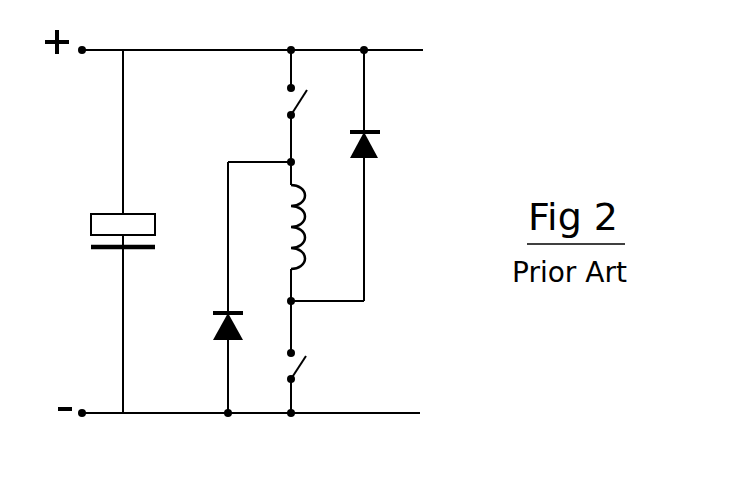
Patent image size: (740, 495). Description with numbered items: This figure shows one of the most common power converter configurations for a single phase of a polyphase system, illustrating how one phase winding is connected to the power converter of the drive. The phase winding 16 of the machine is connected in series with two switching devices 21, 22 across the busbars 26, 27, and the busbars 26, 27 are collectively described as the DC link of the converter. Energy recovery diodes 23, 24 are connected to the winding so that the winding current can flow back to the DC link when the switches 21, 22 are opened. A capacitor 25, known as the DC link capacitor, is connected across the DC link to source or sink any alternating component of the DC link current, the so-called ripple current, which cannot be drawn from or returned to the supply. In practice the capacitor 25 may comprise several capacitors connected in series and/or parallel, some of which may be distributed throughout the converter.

The phase winding 16 is at (309, 208).
The switching device 21 is at (284, 104).
The switching device 22 is at (306, 365).
The energy recovery diode 23 is at (385, 141).
The energy recovery diode 24 is at (212, 319).
The DC link capacitor 25 is at (85, 237).
The busbar 26 is at (202, 50).
The busbar 27 is at (180, 413).